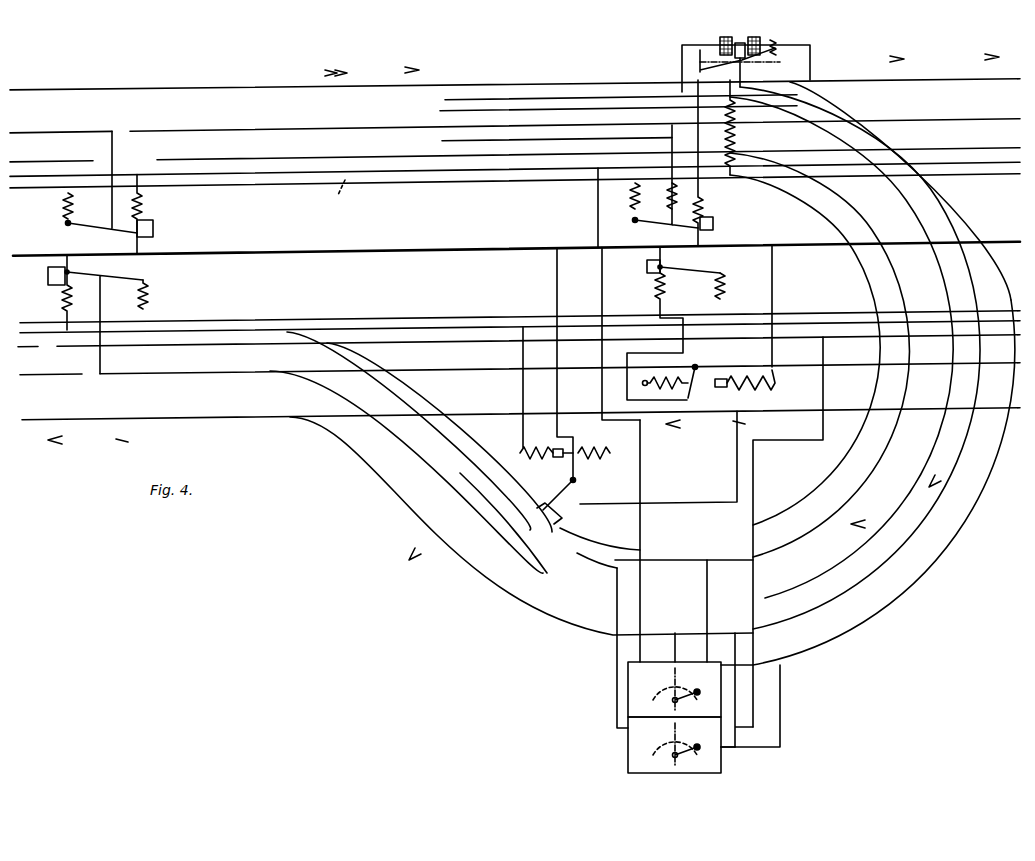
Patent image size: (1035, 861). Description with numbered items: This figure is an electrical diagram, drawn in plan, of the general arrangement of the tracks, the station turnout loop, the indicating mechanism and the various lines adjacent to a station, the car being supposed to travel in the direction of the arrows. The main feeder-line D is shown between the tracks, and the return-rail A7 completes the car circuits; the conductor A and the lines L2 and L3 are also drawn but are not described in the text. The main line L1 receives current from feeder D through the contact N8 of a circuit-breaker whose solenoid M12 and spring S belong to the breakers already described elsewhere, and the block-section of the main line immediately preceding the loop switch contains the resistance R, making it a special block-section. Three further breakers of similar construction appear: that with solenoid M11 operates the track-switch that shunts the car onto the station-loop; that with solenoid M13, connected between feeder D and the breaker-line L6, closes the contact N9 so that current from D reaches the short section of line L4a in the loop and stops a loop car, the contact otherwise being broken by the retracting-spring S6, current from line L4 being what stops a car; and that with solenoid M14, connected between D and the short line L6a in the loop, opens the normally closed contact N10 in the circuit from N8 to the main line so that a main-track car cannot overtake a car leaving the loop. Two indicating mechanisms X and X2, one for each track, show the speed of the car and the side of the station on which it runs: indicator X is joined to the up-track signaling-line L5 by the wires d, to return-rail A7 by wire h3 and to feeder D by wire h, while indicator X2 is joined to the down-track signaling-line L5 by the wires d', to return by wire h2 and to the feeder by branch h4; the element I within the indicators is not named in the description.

The line conductor A is at (515, 72).
The return-rail A7 is at (521, 351).
The main line L1 is at (515, 122).
The line wire L2 is at (399, 240).
The line wire L3 is at (536, 308).
The line L4 is at (557, 135).
The signaling-line L5 is at (515, 353).
The breaker-line L6 is at (515, 242).
The short line L6a is at (565, 535).
The short section of line L4a is at (548, 568).
The main feeder-line D is at (516, 256).
The solenoid M11 is at (720, 40).
The solenoid M12 is at (377, 240).
The solenoid M13 is at (546, 404).
The solenoid M14 is at (758, 318).
The contact N8 is at (155, 238).
The contact N9 is at (559, 379).
The contact N10 is at (688, 395).
The spring S is at (393, 246).
The retracting-spring S6 is at (594, 461).
The resistance R is at (662, 197).
The wires d is at (678, 541).
The wires d' is at (683, 648).
The wire h is at (868, 523).
The wire h2 is at (738, 757).
The wire h3 is at (684, 647).
The branch h4 is at (768, 690).
The indicator X is at (674, 689).
The indicator X2 is at (674, 745).
The indicator pointer I is at (687, 729).